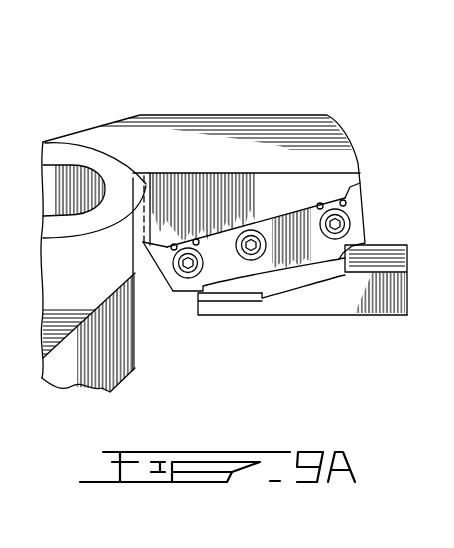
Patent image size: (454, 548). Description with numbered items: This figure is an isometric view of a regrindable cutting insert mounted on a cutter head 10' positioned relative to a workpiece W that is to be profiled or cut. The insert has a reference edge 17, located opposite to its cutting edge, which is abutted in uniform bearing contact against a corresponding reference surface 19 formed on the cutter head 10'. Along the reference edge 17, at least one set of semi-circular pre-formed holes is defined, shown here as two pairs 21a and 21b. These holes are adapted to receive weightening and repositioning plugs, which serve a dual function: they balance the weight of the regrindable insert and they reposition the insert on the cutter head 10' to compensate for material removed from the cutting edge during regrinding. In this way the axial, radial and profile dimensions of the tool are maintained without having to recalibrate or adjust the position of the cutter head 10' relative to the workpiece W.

The cutter head 10' is at (200, 205).
The reference edge 17 is at (288, 212).
The reference surface 19 is at (218, 240).
The pair of semi-circular pre-formed holes 21a is at (199, 243).
The pair of semi-circular pre-formed holes 21b is at (174, 244).
The workpiece W is at (378, 262).